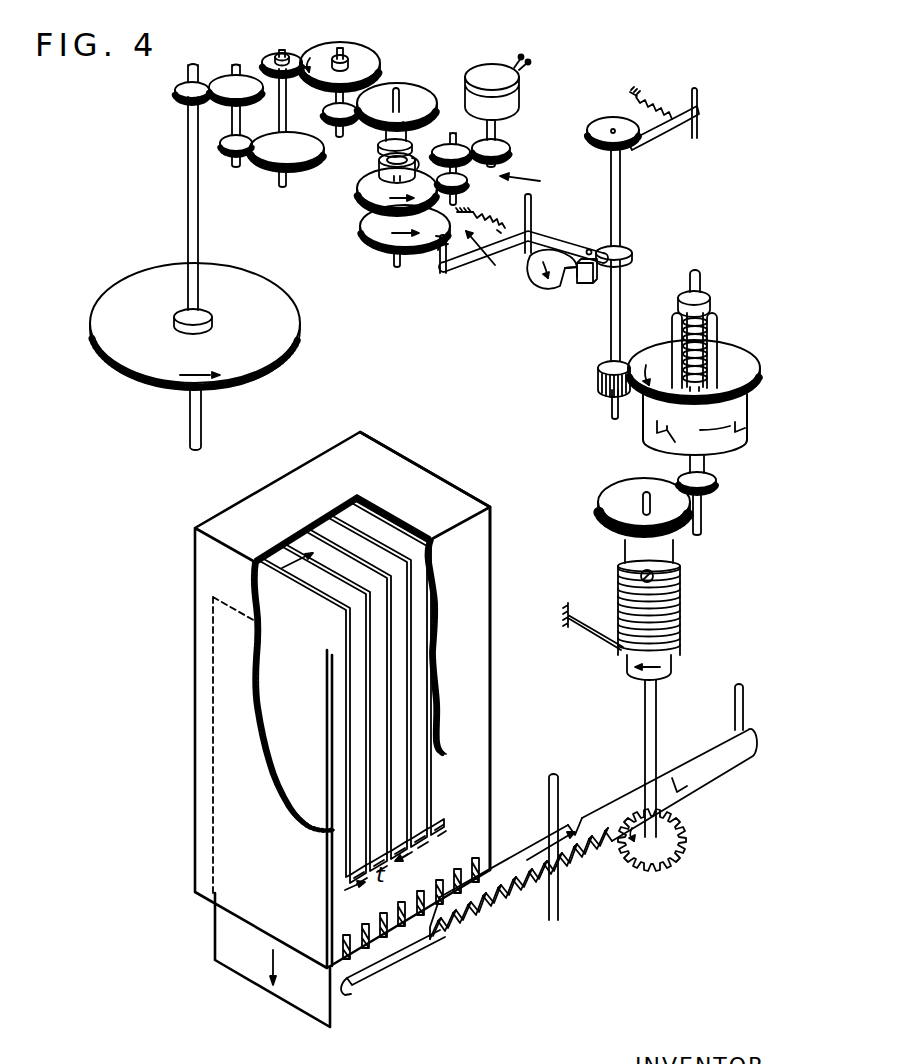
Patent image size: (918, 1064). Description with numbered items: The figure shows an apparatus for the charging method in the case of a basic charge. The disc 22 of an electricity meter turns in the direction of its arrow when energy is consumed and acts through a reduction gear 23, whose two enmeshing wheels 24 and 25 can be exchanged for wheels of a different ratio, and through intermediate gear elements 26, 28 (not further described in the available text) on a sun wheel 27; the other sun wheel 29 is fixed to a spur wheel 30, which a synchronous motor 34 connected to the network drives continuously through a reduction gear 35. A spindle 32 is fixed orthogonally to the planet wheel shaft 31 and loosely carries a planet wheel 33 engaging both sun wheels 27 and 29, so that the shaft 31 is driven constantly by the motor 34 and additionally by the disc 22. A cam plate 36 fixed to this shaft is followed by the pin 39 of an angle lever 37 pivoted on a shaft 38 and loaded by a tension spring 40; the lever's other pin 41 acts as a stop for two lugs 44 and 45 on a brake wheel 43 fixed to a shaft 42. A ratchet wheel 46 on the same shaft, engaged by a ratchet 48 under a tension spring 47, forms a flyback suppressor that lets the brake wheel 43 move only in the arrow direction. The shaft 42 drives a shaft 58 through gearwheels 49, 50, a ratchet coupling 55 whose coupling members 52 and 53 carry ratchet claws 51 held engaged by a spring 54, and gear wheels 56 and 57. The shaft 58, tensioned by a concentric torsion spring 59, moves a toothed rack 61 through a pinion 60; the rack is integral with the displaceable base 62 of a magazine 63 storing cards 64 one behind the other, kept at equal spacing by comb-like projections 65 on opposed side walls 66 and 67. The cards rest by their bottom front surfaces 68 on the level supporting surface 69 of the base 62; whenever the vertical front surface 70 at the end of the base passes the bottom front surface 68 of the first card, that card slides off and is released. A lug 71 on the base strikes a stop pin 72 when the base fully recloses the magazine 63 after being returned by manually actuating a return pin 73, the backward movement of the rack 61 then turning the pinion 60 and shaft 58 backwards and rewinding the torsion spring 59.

The disc 22 is at (103, 307).
The reduction gear 23 is at (256, 192).
The enmeshing wheel 24 is at (270, 57).
The enmeshing wheel 25 is at (348, 45).
The gear 26 is at (334, 176).
The sun wheel 27 is at (378, 145).
The gear 28 is at (417, 95).
The sun wheel 29 is at (380, 172).
The spur wheel 30 is at (368, 197).
The planet wheel shaft 31 is at (397, 93).
The spindle 32 is at (410, 176).
The planet wheel 33 is at (410, 163).
The synchronous motor 34 is at (513, 97).
The reduction gear 35 is at (533, 182).
The cam plate 36 is at (372, 228).
The angle lever 37 is at (547, 223).
The shaft 38 is at (530, 202).
The pin 39 is at (442, 270).
The tension spring 40 is at (476, 216).
The pin 41 is at (632, 257).
The shaft 42 is at (620, 230).
The brake wheel 43 is at (536, 283).
The lug 44 is at (587, 273).
The lug 45 is at (578, 285).
The ratchet wheel 46 is at (590, 132).
The tension spring 47 is at (652, 105).
The ratchet 48 is at (663, 128).
The gearwheel 49 is at (598, 383).
The gearwheel 50 is at (660, 350).
The ratchet claws 51 is at (670, 433).
The coupling member 52 is at (640, 418).
The coupling member 53 is at (643, 433).
The spring 54 is at (700, 350).
The ratchet coupling 55 is at (734, 407).
The gear wheel 56 is at (733, 477).
The gear wheel 57 is at (602, 503).
The shaft 58 is at (647, 712).
The torsion spring 59 is at (673, 612).
The pinion 60 is at (680, 830).
The toothed rack 61 is at (578, 858).
The displaceable base 62 is at (530, 845).
The magazine 63 is at (417, 452).
The cards 64 is at (275, 573).
The comb-like projections 65 is at (425, 837).
The side wall 66 is at (488, 662).
The side wall 67 is at (268, 492).
The bottom front surface 68 is at (440, 900).
The supporting surface 69 is at (400, 936).
The vertical front surface 70 is at (348, 991).
The lug 71 is at (580, 797).
The stop pin 72 is at (548, 788).
The return pin 73 is at (743, 698).